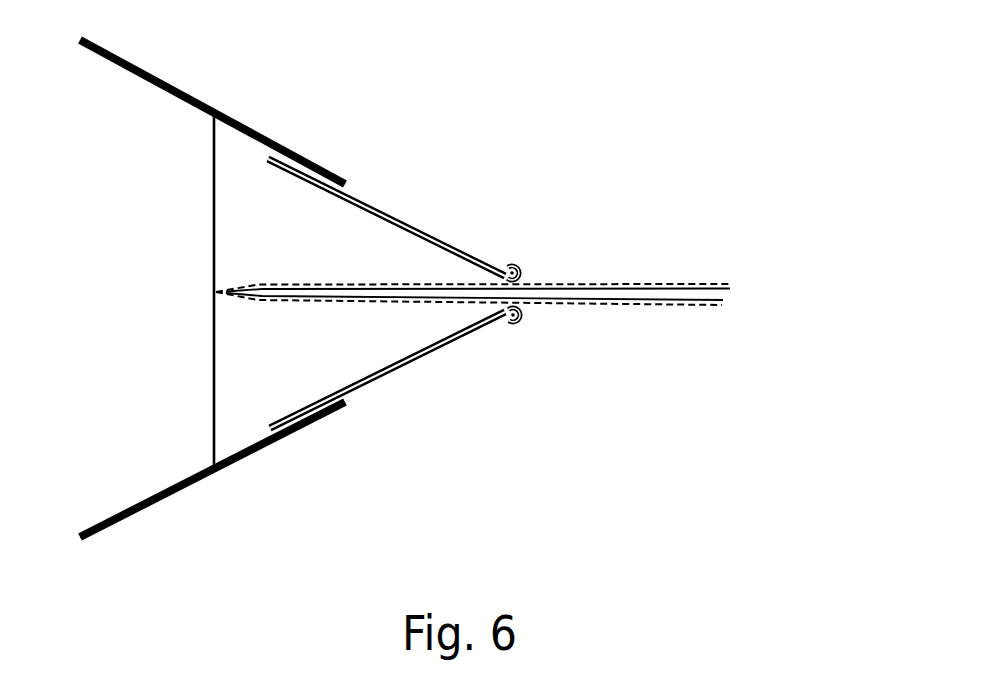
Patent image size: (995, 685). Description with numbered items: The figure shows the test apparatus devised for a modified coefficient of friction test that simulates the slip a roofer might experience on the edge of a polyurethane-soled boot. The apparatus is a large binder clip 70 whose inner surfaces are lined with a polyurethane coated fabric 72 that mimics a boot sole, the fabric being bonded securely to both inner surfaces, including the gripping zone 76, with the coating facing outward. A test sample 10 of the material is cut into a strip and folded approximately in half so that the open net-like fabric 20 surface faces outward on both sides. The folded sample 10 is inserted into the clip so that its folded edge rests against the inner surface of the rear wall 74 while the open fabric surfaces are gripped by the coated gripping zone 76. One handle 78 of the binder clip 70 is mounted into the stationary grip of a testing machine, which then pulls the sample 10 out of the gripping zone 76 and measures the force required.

The test sample 10 is at (761, 318).
The open net-like fabric 20 is at (641, 268).
The binder clip 70 is at (278, 288).
The polyurethane coated fabric 72 is at (413, 248).
The rear wall 74 is at (205, 250).
The gripping zone 76 is at (500, 339).
The handle 78 is at (129, 101).